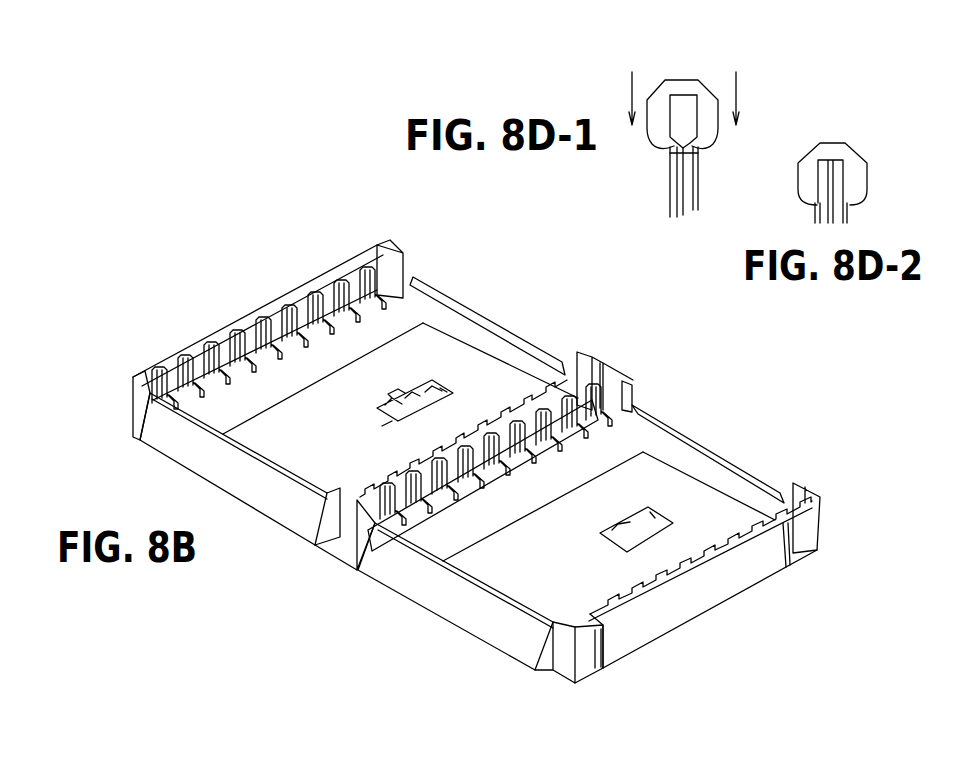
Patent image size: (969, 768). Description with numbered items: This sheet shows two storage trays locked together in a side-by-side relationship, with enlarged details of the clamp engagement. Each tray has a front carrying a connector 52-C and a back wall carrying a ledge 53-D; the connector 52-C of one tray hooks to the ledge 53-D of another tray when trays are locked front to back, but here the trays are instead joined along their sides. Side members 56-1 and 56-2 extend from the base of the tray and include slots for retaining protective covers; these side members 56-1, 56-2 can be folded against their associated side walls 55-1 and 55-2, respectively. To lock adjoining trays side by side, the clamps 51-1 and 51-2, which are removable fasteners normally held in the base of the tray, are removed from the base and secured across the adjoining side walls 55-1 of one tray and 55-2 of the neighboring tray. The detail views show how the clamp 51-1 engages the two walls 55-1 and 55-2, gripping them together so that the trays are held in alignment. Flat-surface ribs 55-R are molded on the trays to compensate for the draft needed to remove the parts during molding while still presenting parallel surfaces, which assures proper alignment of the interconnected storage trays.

In FIG. 8B, the clamp 51-1 is at (382, 426).
In FIG. 8D-1, the clamp 51-1 is at (680, 78).
In FIG. 8D-2, the clamp 51-1 is at (847, 143).
In FIG. 8B, the clamp 51-2 is at (447, 388).
In FIG. 8B, the connector 52-C is at (202, 453).
In FIG. 8B, the ledge 53-D is at (510, 333).
In FIG. 8B, the side wall 55-1 is at (642, 617).
In FIG. 8D-1, the side wall 55-1 is at (668, 177).
In FIG. 8D-1, the side wall 55-2 is at (700, 198).
In FIG. 8B, the flat-surface rib 55-R is at (793, 548).
In FIG. 8B, the side member 56-1 is at (707, 553).
In FIG. 8B, the side member 56-2 is at (308, 302).